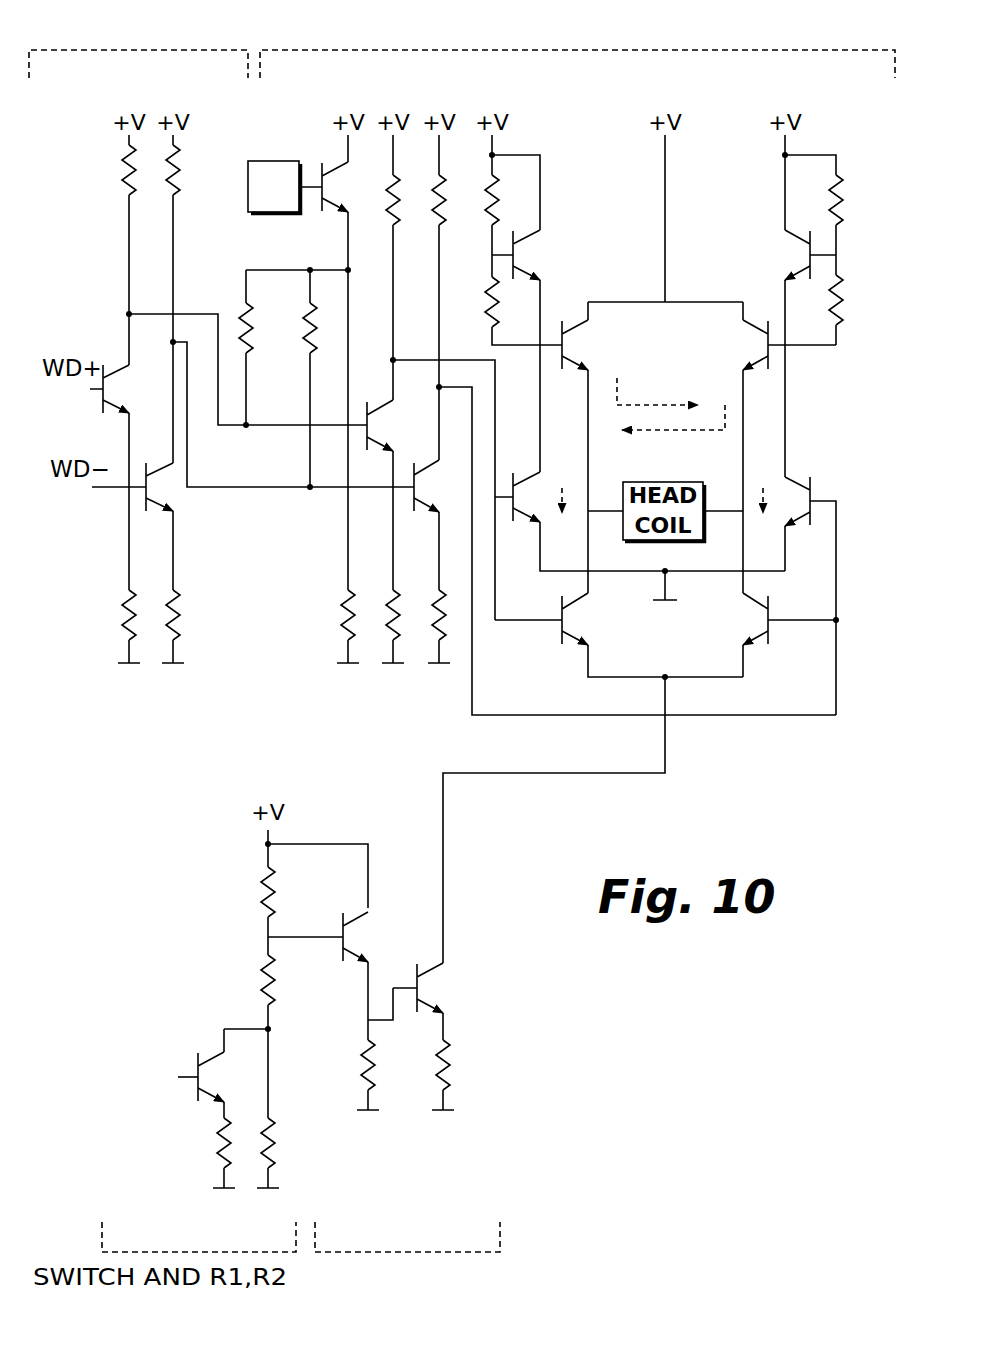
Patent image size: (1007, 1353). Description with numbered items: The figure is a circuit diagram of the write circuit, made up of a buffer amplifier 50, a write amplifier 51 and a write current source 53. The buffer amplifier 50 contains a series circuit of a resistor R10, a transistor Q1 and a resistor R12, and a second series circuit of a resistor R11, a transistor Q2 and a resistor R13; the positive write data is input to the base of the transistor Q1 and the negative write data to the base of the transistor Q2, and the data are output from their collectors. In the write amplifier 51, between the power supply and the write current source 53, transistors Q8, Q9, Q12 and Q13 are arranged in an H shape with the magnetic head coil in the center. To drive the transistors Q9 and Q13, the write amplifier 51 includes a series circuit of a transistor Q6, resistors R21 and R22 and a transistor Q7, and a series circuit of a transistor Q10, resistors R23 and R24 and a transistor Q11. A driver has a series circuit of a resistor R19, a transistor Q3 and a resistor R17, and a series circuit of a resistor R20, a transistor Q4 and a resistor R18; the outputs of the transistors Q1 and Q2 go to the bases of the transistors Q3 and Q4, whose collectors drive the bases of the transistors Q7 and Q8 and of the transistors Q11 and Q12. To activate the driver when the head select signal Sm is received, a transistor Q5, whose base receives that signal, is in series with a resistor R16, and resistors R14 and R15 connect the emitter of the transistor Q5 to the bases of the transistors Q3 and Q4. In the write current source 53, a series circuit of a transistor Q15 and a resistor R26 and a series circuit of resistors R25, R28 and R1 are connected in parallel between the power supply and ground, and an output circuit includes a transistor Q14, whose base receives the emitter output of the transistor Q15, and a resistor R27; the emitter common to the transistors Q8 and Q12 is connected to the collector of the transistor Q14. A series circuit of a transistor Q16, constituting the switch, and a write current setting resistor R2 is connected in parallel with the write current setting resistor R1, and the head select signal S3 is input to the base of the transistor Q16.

The buffer amplifier 50 is at (138, 48).
The write amplifier 51 is at (577, 48).
The write current source 53 is at (451, 1270).
The resistor R10 is at (106, 250).
The resistor R11 is at (199, 299).
The resistor R12 is at (113, 626).
The resistor R13 is at (189, 626).
The resistor R14 is at (269, 347).
The resistor R15 is at (283, 378).
The resistor R16 is at (329, 601).
The resistor R17 is at (381, 601).
The resistor R18 is at (427, 601).
The resistor R19 is at (378, 267).
The resistor R20 is at (424, 297).
The resistor R21 is at (495, 206).
The resistor R22 is at (506, 311).
The resistor R23 is at (834, 205).
The resistor R24 is at (858, 307).
The resistor R25 is at (299, 903).
The resistor R26 is at (339, 1065).
The resistor R27 is at (471, 1075).
The resistor R28 is at (278, 1036).
The write current setting resistor R1 is at (290, 1153).
The write current setting resistor R2 is at (206, 1153).
The transistor Q1 is at (108, 453).
The transistor Q2 is at (132, 481).
The transistor Q3 is at (396, 495).
The transistor Q4 is at (442, 525).
The transistor Q5 is at (337, 362).
The transistor Q6 is at (516, 328).
The transistor Q7 is at (640, 506).
The transistor Q8 is at (619, 636).
The transistor Q9 is at (568, 436).
The transistor Q10 is at (792, 353).
The transistor Q11 is at (818, 582).
The transistor Q12 is at (767, 635).
The transistor Q13 is at (699, 364).
The transistor Q14 is at (405, 982).
The transistor Q15 is at (318, 957).
The transistor Q16 is at (229, 1073).
The head select signal S3 is at (164, 1077).
The head select signal Sm is at (274, 187).